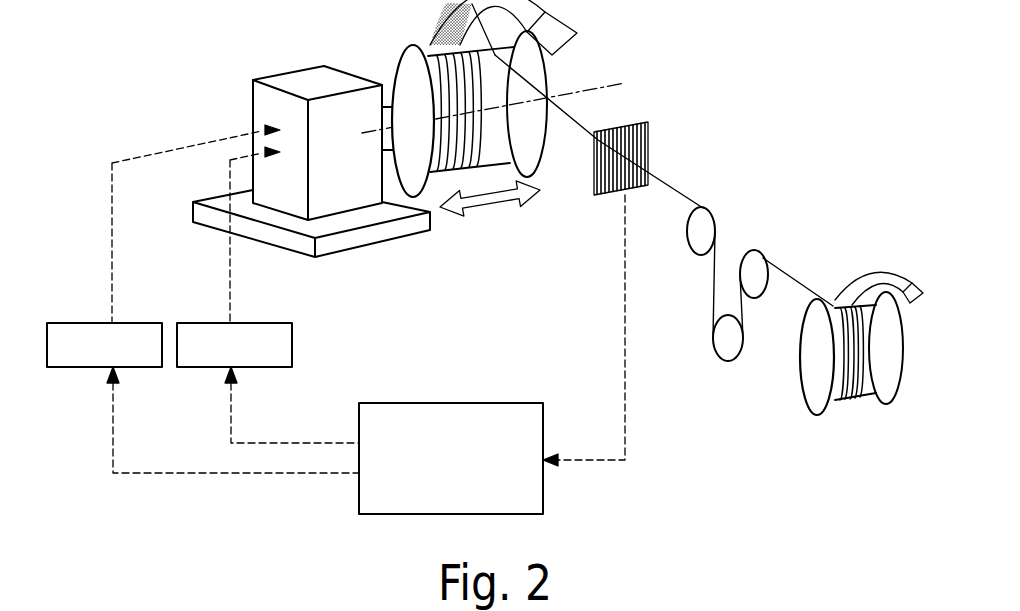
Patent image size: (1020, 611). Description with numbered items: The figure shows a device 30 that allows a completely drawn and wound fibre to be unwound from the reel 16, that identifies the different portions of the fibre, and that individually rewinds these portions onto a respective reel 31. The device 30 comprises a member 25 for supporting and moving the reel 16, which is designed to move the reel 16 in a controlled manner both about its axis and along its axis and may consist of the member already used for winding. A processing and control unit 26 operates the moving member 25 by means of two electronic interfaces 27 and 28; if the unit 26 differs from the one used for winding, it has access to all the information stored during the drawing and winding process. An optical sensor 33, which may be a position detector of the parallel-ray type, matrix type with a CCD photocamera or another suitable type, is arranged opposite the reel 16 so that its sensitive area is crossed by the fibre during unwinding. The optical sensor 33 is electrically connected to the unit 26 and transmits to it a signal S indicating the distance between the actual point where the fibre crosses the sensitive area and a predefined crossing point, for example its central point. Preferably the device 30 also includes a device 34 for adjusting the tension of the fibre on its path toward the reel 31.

The reel 16 is at (445, 11).
The member for supporting and moving the reel 25 is at (298, 76).
The processing and control unit 26 is at (503, 416).
The electronic interface 27 is at (268, 352).
The electronic interface 28 is at (137, 353).
The device for unwinding the fibre 30 is at (831, 112).
The reel 31 is at (868, 387).
The optical sensor 33 is at (638, 150).
The device for adjusting the tension of the fibre 34 is at (756, 234).
The signal S is at (592, 232).